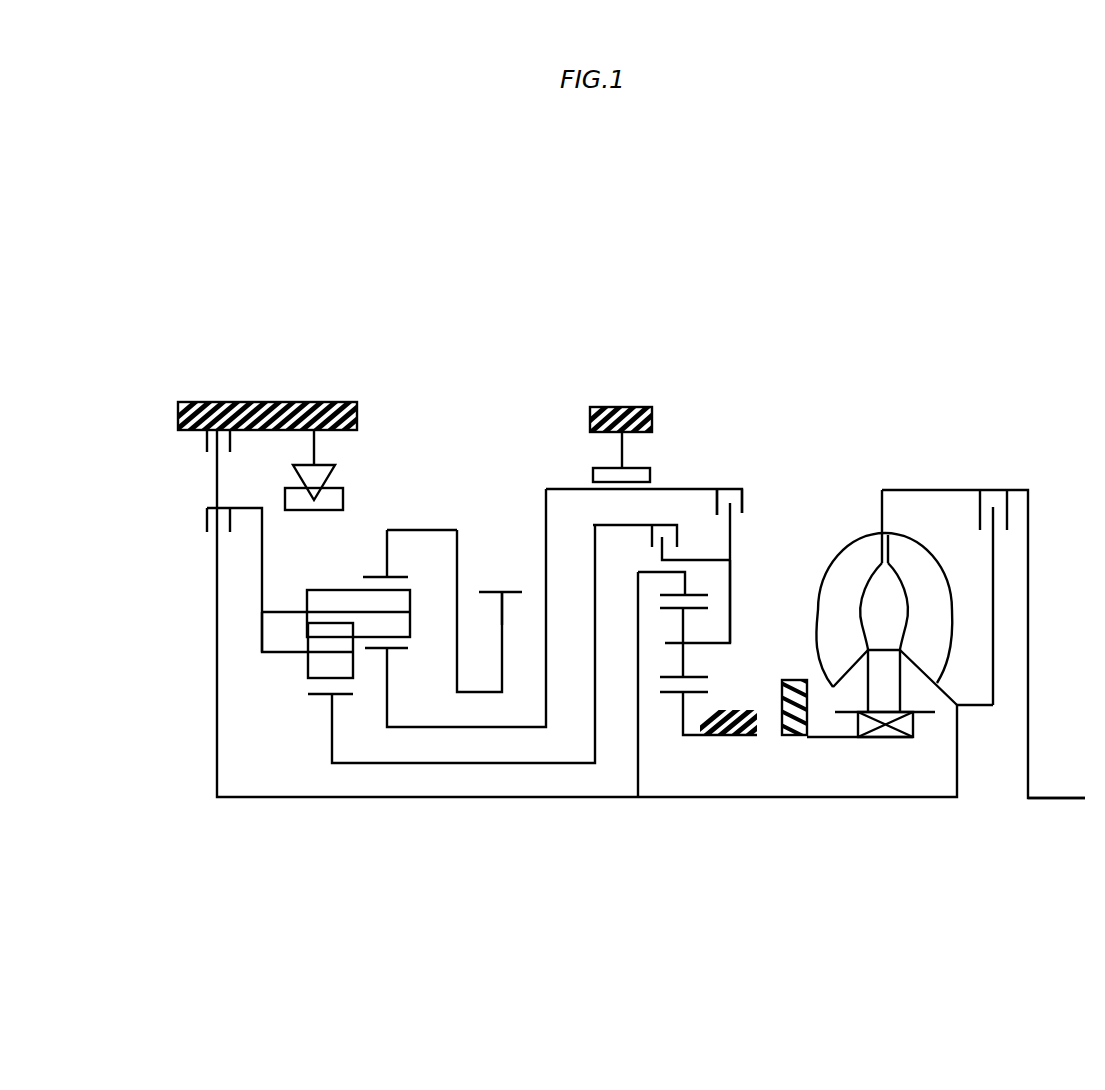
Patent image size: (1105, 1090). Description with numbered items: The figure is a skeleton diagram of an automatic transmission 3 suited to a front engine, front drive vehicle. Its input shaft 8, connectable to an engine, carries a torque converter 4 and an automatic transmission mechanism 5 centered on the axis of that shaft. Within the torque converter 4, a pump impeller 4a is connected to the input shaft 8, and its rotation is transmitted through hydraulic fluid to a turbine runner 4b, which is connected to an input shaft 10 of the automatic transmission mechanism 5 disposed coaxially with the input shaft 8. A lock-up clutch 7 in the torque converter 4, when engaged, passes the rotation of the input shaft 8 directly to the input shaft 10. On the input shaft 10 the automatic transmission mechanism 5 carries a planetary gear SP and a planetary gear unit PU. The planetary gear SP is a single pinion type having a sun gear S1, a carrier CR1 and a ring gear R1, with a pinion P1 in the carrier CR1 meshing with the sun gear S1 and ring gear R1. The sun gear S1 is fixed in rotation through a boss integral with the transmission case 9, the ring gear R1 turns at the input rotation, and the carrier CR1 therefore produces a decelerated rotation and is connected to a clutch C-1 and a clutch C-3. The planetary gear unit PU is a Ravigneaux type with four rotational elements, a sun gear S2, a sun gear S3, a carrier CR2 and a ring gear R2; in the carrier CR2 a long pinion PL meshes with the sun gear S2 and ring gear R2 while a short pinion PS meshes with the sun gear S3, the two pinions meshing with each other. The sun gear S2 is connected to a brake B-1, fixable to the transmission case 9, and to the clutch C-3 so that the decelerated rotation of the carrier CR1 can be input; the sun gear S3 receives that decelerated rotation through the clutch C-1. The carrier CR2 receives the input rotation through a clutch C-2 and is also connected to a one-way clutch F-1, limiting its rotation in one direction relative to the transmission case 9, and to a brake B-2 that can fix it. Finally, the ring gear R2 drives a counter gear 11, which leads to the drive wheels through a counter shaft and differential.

The automatic transmission 3 is at (670, 267).
The torque converter 4 is at (856, 476).
The pump impeller 4a is at (865, 557).
The turbine runner 4b is at (923, 578).
The automatic transmission mechanism 5 is at (532, 370).
The lock-up clutch 7 is at (1010, 489).
The input shaft 8 is at (1047, 797).
The transmission case 9 is at (645, 431).
The input shaft 10 is at (922, 798).
The counter gear 11 is at (505, 597).
The brake B-1 is at (627, 428).
The brake B-2 is at (271, 410).
The one-way clutch F-1 is at (314, 439).
The clutch C-1 is at (635, 542).
The clutch C-2 is at (204, 537).
The clutch C-3 is at (748, 521).
The carrier CR1 is at (748, 575).
The carrier CR2 is at (245, 627).
The planetary gear unit PU is at (378, 503).
The long pinion PL is at (398, 600).
The short pinion PS is at (322, 665).
The pinion P1 is at (695, 670).
The ring gear R1 is at (690, 590).
The ring gear R2 is at (398, 577).
The sun gear S1 is at (675, 697).
The sun gear S2 is at (393, 653).
The sun gear S3 is at (318, 698).
The planetary gear SP is at (726, 683).